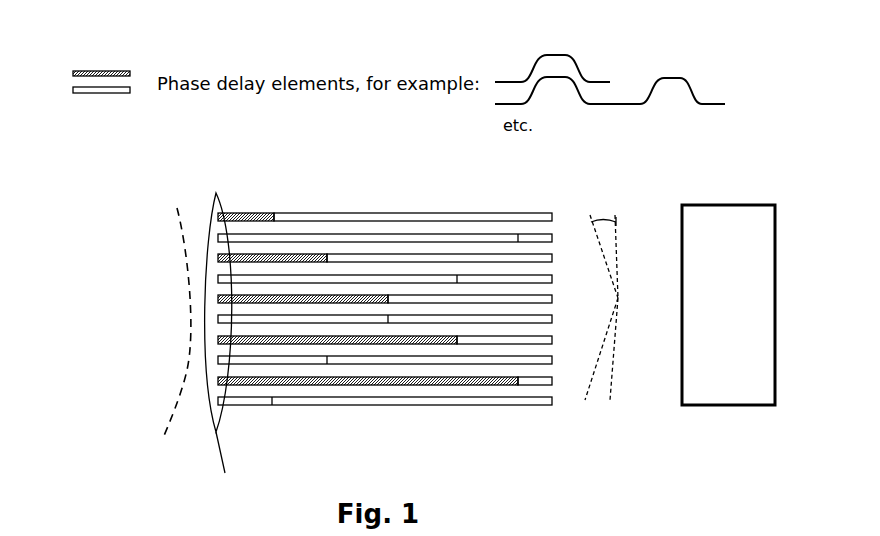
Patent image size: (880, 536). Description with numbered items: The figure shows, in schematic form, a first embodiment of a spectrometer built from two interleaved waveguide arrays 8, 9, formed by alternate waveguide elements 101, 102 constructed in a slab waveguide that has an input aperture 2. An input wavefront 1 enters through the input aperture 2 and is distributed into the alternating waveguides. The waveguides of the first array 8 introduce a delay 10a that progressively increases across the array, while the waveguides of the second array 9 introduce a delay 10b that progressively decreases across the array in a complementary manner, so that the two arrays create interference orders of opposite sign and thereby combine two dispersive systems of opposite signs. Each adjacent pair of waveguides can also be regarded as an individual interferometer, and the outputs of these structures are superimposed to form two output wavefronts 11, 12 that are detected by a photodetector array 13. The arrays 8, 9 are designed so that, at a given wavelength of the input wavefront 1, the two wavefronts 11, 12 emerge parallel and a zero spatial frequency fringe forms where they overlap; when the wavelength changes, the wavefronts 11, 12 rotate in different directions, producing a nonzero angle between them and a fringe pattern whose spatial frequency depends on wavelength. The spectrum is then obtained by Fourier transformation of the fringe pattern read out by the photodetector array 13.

The input wavefront 1 is at (190, 287).
The input aperture 2 is at (213, 192).
The delay 10a is at (96, 70).
The delay 10b is at (100, 94).
The waveguide element 101 is at (330, 217).
The waveguide element 102 is at (372, 235).
The second waveguide array 9 is at (522, 215).
The first waveguide array 8 is at (542, 237).
The output wavefront 11 is at (603, 243).
The output wavefront 12 is at (610, 397).
The photodetector array 13 is at (728, 305).